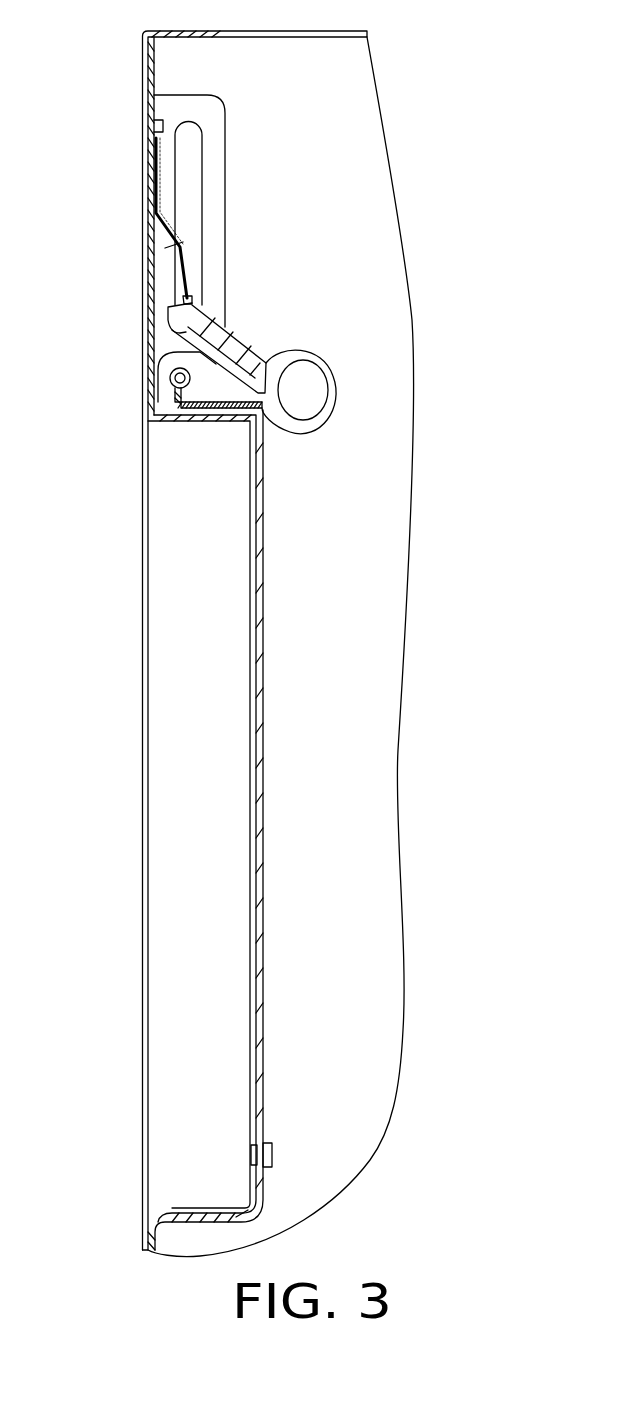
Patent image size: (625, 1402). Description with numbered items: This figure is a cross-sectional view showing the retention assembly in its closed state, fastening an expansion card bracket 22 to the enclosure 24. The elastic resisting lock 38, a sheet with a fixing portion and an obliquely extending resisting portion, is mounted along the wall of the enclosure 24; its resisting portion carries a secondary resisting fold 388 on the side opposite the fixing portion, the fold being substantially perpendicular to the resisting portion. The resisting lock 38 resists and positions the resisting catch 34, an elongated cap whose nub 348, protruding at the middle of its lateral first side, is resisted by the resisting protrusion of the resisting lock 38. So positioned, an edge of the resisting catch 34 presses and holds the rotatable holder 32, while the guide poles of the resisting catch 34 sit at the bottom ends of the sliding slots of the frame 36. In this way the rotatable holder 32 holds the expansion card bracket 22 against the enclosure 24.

The expansion card bracket 22 is at (260, 705).
The enclosure 24 is at (198, 1215).
The rotatable holder 32 is at (172, 390).
The resisting catch 34 is at (228, 367).
The frame 36 is at (172, 107).
The resisting lock 38 is at (153, 167).
The nub 348 is at (178, 317).
The secondary resisting fold 388 is at (186, 302).